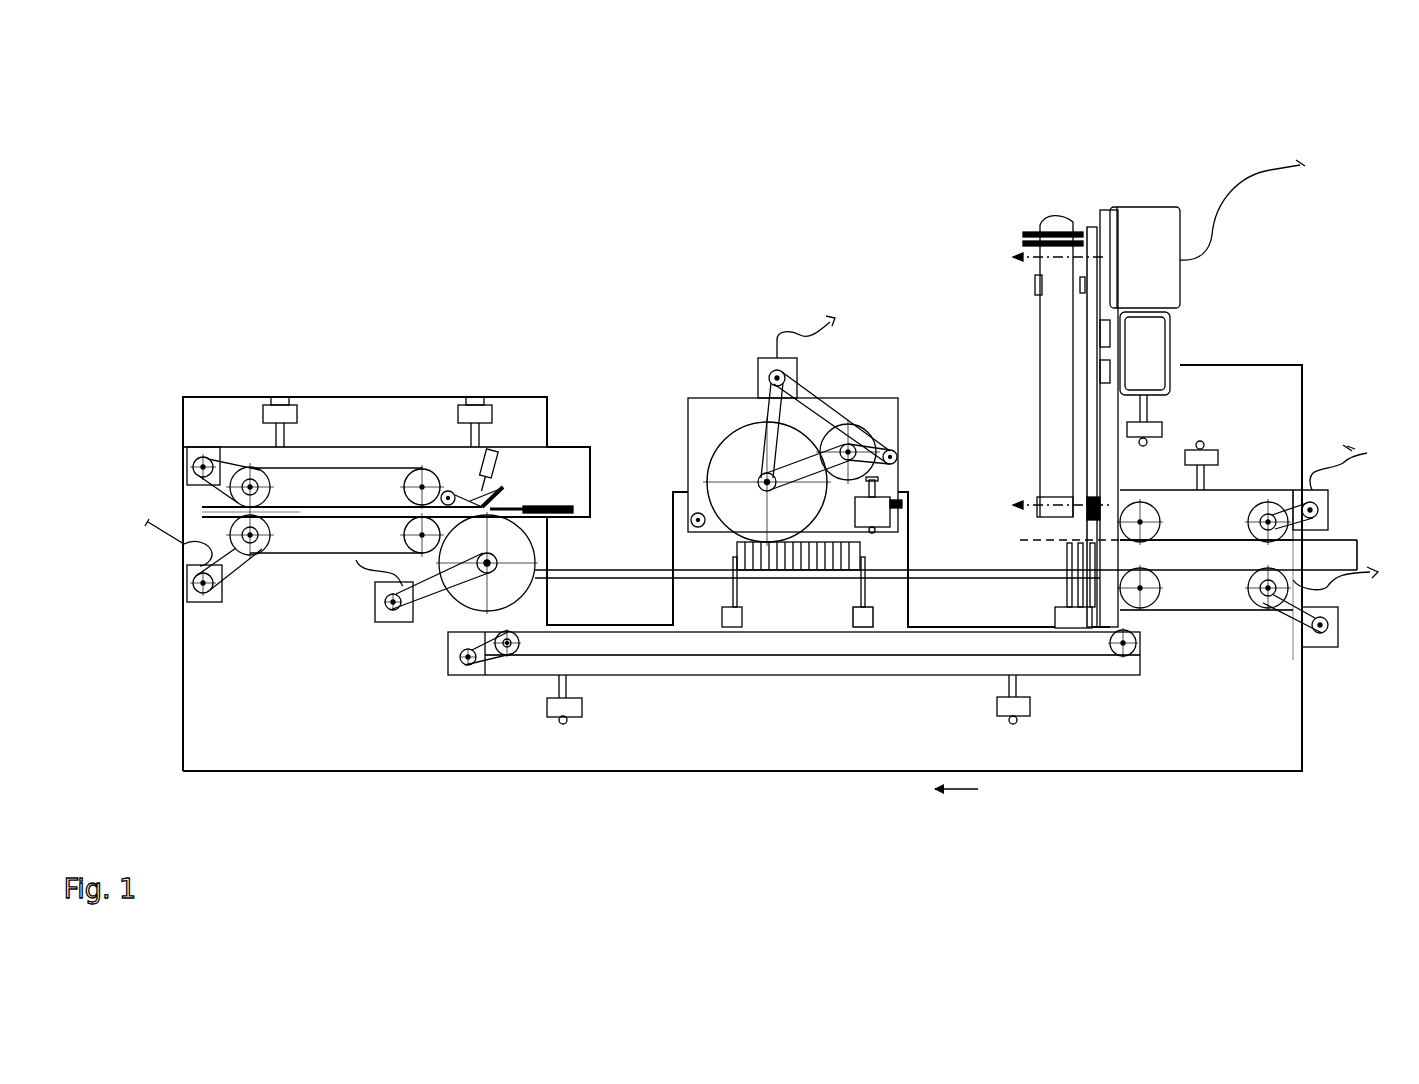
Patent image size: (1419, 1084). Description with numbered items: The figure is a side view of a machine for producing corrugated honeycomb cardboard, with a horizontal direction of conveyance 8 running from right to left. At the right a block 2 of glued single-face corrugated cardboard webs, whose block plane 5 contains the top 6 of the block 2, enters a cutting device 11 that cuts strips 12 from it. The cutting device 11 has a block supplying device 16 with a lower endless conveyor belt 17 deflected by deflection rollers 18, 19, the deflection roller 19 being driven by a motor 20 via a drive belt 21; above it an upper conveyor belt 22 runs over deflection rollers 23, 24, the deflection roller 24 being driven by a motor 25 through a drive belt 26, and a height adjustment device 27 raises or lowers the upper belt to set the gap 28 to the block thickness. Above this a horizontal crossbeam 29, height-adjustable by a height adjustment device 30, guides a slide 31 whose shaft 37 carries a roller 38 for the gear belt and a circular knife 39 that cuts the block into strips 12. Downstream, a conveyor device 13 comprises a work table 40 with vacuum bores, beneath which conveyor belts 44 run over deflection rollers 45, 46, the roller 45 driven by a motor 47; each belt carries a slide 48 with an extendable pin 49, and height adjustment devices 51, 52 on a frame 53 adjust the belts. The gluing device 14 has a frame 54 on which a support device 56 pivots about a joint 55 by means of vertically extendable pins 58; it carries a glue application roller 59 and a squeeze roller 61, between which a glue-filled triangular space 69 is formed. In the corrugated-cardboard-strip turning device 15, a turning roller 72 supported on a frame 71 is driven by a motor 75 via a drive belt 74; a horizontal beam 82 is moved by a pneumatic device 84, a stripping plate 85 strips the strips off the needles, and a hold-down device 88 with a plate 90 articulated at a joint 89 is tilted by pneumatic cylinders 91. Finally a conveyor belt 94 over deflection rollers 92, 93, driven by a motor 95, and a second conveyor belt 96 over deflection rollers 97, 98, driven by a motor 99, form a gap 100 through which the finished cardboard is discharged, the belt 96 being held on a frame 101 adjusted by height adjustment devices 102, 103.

The block 2 is at (1357, 555).
The block plane 5 is at (1357, 541).
The top of the block 6 is at (1328, 505).
The direction of conveyance 8 is at (953, 790).
The cutting device 11 is at (1137, 188).
The strips 12 is at (1085, 640).
The conveyor device 13 is at (953, 350).
The gluing device 14 is at (773, 330).
The corrugated-cardboard-strip turning device 15 is at (471, 385).
The block supplying device 16 is at (1298, 490).
The lower endless conveyor belt 17 is at (1178, 610).
The deflection roller 18 is at (1152, 608).
The deflection roller 19 is at (1242, 608).
The motor 20 is at (1338, 632).
The drive belt 21 is at (1280, 612).
The upper conveyor belt 22 is at (1277, 486).
The deflection roller 23 is at (1263, 483).
The deflection roller 24 is at (1290, 488).
The motor 25 is at (1358, 463).
The drive belt 26 is at (1305, 485).
The height adjustment device 27 is at (1220, 477).
The gap 28 is at (1318, 605).
The horizontal crossbeam 29 is at (1170, 343).
The height adjustment device 30 is at (1145, 500).
The slide 31 is at (1030, 222).
The shaft 37 is at (1083, 507).
The roller 38 is at (1040, 505).
The circular knife 39 is at (1090, 450).
The work table 40 is at (620, 580).
The conveyor belts 44 is at (668, 657).
The deflection roller 45 is at (500, 611).
The deflection roller 46 is at (1123, 657).
The motor 47 is at (468, 667).
The slide 48 is at (733, 628).
The pin 49 is at (850, 592).
The height adjustment device 51 is at (573, 720).
The height adjustment device 52 is at (1012, 722).
The frame 53 is at (862, 628).
The frame 54 is at (680, 500).
The joint 55 is at (698, 512).
The upper support device 56 is at (735, 440).
The vertically extendable pins 58 is at (877, 487).
The glue application roller 59 is at (745, 425).
The squeeze roller 61 is at (862, 440).
The triangular space 69 is at (818, 427).
The frame 71 is at (200, 697).
The turning roller 72 is at (514, 655).
The drive belt 74 is at (427, 597).
The motor 75 is at (388, 622).
The horizontal beam 82 is at (512, 503).
The pneumatic device 84 is at (565, 505).
The stripping plate 85 is at (280, 445).
The hold-down device 88 is at (418, 470).
The joint 89 is at (445, 490).
The plate 90 is at (490, 457).
The pneumatic cylinders 91 is at (505, 487).
The deflection roller 92 is at (237, 532).
The deflection roller 93 is at (410, 543).
The conveyor belt 94 is at (280, 553).
The motor 95 is at (197, 580).
The second conveyor belt 96 is at (277, 468).
The deflection roller 97 is at (240, 466).
The deflection roller 98 is at (320, 512).
The motor 99 is at (197, 472).
The gap 100 is at (203, 507).
The frame 101 is at (556, 505).
The height adjustment device 102 is at (273, 398).
The height adjustment device 103 is at (468, 398).